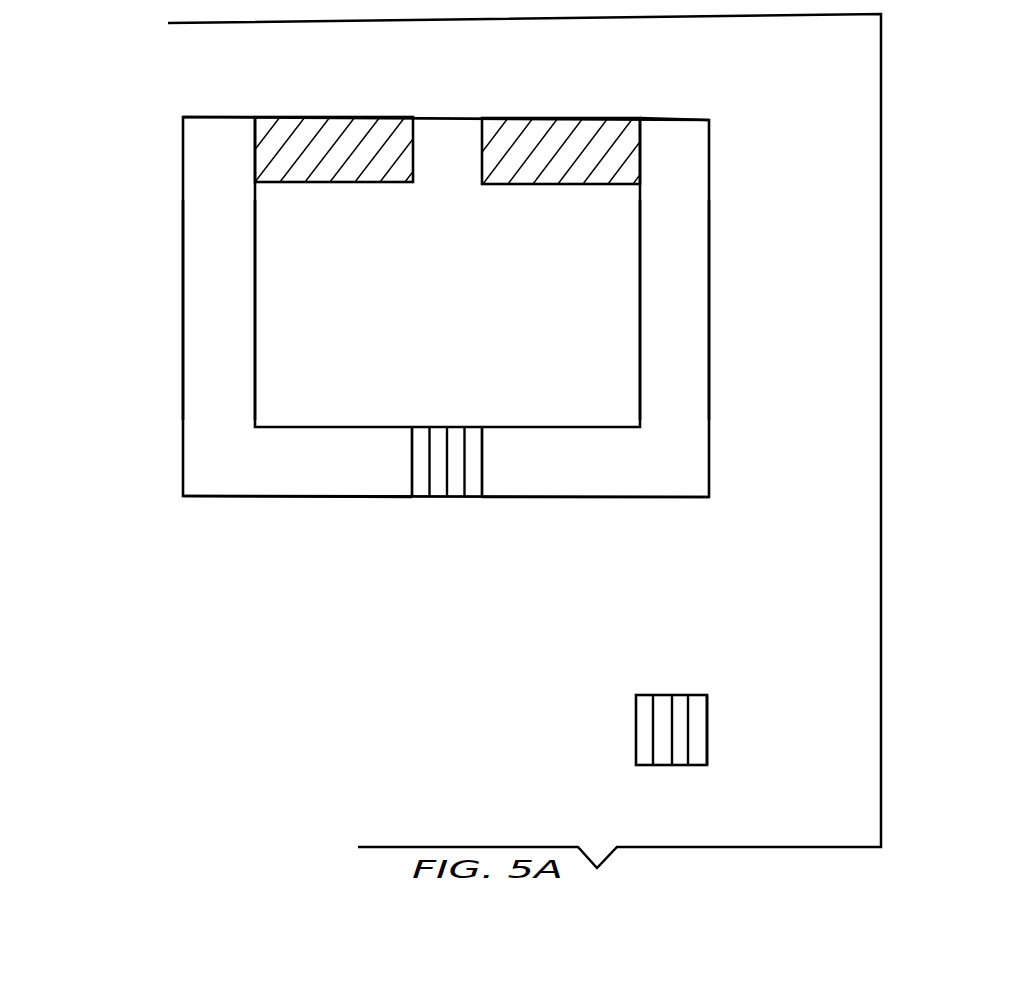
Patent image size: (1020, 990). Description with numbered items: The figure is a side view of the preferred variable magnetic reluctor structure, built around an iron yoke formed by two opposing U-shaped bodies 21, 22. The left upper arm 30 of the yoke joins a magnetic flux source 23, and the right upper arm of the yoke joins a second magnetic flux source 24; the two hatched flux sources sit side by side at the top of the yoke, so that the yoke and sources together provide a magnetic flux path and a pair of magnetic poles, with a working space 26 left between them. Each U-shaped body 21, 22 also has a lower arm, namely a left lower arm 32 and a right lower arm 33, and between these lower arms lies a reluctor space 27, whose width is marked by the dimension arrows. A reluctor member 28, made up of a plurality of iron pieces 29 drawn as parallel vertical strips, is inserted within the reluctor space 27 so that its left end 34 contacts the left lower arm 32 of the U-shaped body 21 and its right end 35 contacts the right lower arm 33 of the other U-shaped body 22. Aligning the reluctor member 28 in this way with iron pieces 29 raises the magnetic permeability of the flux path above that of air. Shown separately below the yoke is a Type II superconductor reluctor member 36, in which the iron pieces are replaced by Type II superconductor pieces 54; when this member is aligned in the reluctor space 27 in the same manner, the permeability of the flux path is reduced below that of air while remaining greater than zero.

The U-shaped body 21 is at (165, 308).
The U-shaped body 22 is at (728, 314).
The magnetic flux source 23 is at (342, 127).
The magnetic flux source 24 is at (553, 127).
The working space 26 is at (438, 127).
The reluctor space 27 is at (360, 388).
The reluctor member 28 is at (668, 162).
The iron pieces 29 is at (423, 490).
The left upper arm 30 is at (227, 157).
The left lower arm 32 is at (223, 455).
The right lower arm 33 is at (668, 460).
The left end 34 is at (412, 463).
The right end 35 is at (486, 465).
The Type II superconductor reluctor member 36 is at (608, 732).
The Type II superconductor pieces 54 is at (700, 755).